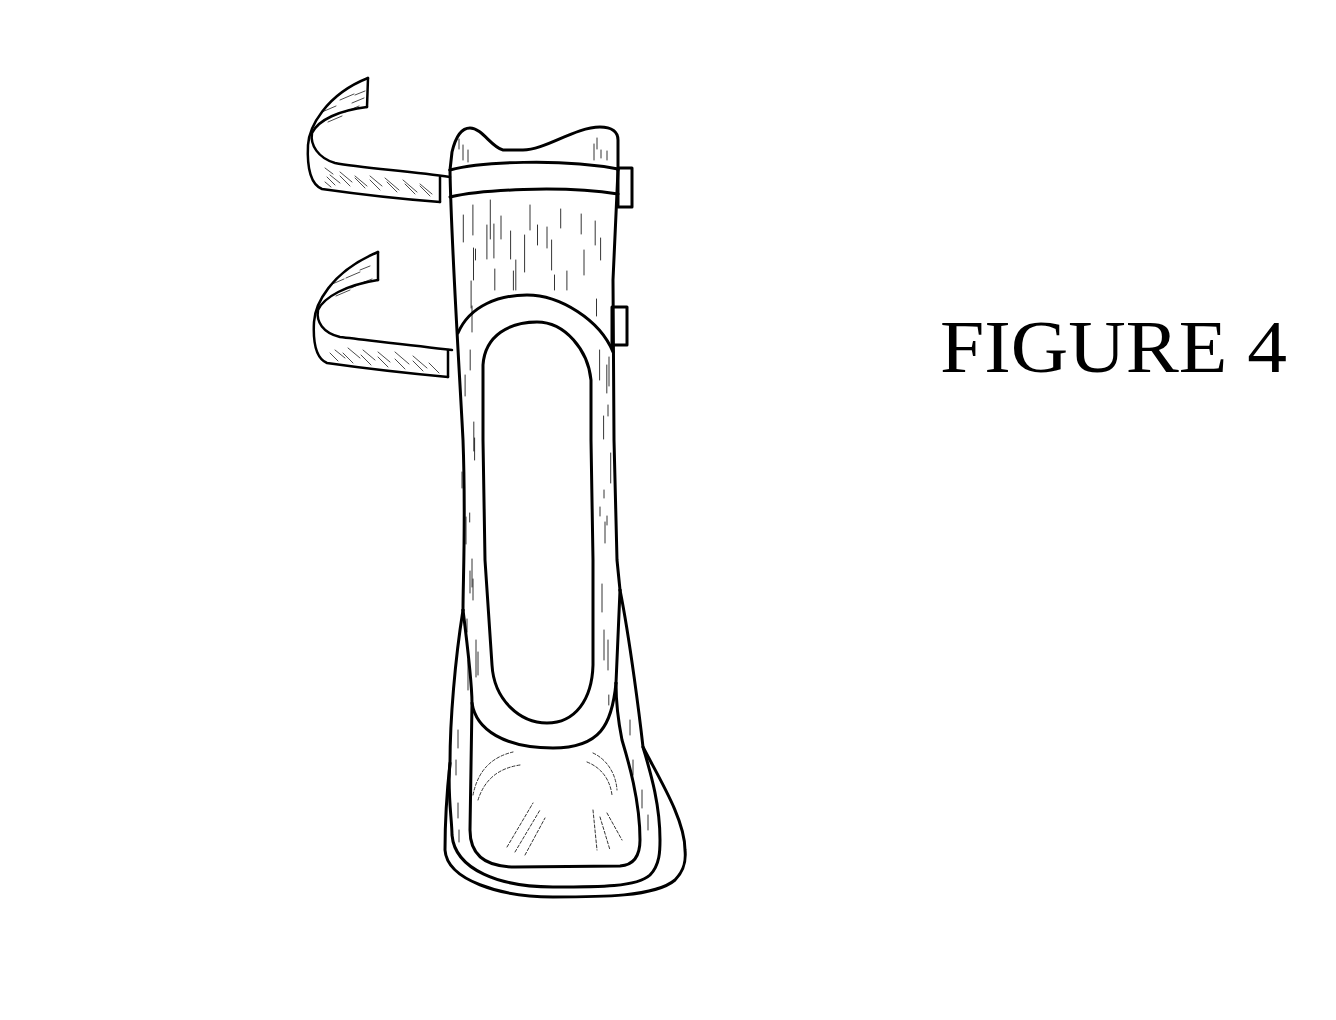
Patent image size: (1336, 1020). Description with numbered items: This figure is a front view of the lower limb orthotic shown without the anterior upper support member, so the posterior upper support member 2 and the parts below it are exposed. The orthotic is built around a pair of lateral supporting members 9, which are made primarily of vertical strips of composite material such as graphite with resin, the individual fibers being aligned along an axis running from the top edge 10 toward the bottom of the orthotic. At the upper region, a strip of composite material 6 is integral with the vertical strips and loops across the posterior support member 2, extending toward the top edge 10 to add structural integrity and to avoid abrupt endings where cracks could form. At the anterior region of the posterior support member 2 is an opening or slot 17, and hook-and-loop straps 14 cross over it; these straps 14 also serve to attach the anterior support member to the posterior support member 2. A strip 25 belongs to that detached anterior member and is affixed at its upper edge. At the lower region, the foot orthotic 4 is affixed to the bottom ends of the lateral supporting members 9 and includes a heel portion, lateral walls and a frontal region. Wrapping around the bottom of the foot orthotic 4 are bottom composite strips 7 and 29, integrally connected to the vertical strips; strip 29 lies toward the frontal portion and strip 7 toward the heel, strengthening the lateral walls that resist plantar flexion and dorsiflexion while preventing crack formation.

The posterior upper support member 2 is at (530, 242).
The foot orthotic 4 is at (540, 788).
The strip of composite material 6 is at (540, 170).
The bottom composite strip 7 is at (547, 738).
The lateral supporting member 9 is at (473, 515).
The top edge 10 is at (523, 142).
The strap 14 is at (335, 195).
The opening or slot 17 is at (548, 578).
The strip 25 is at (600, 898).
The bottom composite strip 29 is at (550, 865).